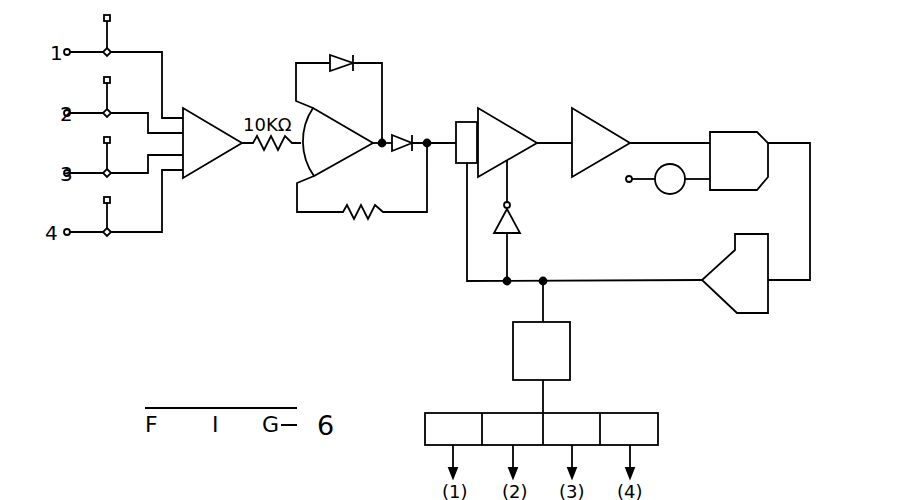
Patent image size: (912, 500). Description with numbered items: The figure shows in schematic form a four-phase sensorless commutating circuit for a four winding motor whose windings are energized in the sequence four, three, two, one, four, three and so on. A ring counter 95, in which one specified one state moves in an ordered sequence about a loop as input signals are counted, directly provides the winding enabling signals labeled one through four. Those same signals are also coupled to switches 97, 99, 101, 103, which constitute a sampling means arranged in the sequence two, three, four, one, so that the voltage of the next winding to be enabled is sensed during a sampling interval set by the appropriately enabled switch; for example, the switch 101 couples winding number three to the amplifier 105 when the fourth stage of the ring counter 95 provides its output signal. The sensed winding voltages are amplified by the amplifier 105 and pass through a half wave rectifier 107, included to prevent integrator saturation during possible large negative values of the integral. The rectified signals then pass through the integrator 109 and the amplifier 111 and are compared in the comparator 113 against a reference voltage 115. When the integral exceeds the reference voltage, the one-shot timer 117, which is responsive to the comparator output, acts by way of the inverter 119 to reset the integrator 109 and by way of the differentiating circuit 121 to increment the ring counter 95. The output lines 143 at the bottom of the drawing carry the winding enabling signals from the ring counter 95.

The ring counter 95 is at (652, 423).
The switch 97 is at (103, 48).
The switch 99 is at (103, 109).
The switch 101 is at (103, 169).
The switch 103 is at (103, 228).
The amplifier 105 is at (220, 127).
The half wave rectifier 107 is at (305, 168).
The integrator 109 is at (515, 124).
The amplifier 111 is at (608, 125).
The comparator 113 is at (733, 132).
The reference voltage 115 is at (670, 196).
The one-shot timer 117 is at (736, 313).
The inverter 119 is at (519, 217).
The differentiating circuit 121 is at (570, 350).
The output lines 143 is at (362, 494).